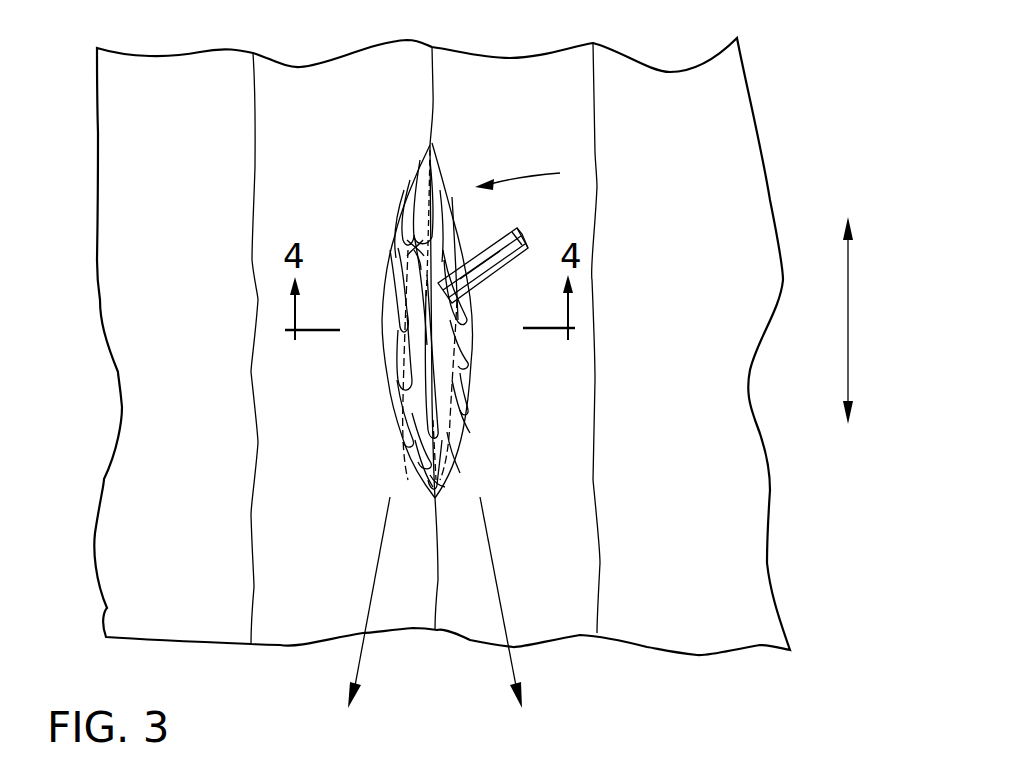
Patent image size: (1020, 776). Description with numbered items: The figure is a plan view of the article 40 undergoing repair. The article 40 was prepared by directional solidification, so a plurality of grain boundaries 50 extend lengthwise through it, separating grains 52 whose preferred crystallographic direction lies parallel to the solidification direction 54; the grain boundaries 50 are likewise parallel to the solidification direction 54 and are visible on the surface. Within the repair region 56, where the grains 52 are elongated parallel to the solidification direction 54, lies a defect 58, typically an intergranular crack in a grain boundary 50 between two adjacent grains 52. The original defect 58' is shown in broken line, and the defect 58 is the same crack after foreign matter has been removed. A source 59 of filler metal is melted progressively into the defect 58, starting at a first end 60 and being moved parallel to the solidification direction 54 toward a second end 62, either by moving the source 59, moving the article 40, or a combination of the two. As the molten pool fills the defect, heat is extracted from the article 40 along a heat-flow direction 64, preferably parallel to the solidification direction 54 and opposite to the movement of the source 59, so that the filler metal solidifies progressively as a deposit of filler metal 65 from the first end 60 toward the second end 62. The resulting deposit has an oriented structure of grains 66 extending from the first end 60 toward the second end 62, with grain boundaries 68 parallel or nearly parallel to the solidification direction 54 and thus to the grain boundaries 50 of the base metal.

The article 40 is at (148, 373).
The grain boundaries 50 is at (437, 93).
The grains 52 is at (380, 67).
The solidification direction 54 is at (848, 308).
The repair region 56 is at (534, 176).
The defect 58 is at (408, 319).
The original defect 58' is at (371, 234).
The source of filler metal 59 is at (498, 243).
The first end 60 is at (433, 478).
The second end 62 is at (428, 163).
The heat-flow direction 64 is at (380, 543).
The deposit of filler metal 65 is at (440, 400).
The grains 66 is at (397, 267).
The grain boundaries 68 is at (400, 292).